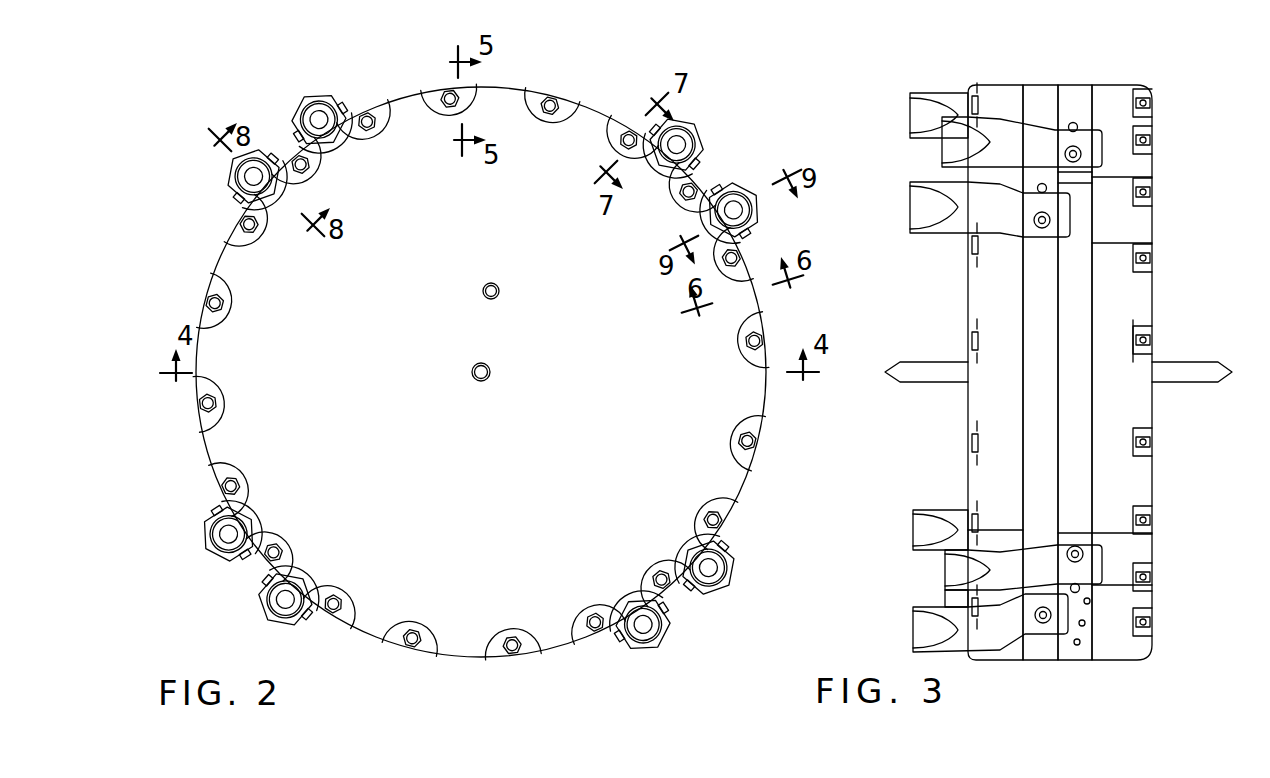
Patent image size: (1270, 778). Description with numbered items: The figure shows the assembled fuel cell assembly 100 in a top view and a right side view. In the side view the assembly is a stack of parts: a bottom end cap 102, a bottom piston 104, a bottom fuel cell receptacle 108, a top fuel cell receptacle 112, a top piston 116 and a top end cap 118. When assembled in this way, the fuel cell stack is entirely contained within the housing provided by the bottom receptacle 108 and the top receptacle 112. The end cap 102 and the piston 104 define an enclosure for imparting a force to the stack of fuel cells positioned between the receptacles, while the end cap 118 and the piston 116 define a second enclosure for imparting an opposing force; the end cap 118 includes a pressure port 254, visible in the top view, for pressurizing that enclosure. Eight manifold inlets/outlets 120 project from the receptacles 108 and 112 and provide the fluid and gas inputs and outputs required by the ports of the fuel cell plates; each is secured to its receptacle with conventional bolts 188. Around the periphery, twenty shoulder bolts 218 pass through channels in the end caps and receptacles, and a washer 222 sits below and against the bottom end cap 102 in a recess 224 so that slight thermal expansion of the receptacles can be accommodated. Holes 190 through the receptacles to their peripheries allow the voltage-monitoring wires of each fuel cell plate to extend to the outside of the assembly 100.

In FIG. 2, the fuel cell assembly 100 is at (266, 88).
In FIG. 3, the fuel cell assembly 100 is at (947, 62).
In FIG. 3, the bottom end cap 102 is at (1168, 357).
In FIG. 3, the bottom piston 104 is at (1173, 390).
In FIG. 3, the bottom fuel cell receptacle 108 is at (1077, 84).
In FIG. 3, the top fuel cell receptacle 112 is at (1031, 84).
In FIG. 2, the top piston 116 is at (492, 365).
In FIG. 3, the top piston 116 is at (937, 392).
In FIG. 2, the top end cap 118 is at (583, 134).
In FIG. 3, the top end cap 118 is at (980, 84).
In FIG. 2, the manifold inlets/outlets 120 is at (749, 170).
In FIG. 3, the manifold inlets/outlets 120 is at (926, 90).
In FIG. 3, the bolts 188 is at (1043, 183).
In FIG. 3, the holes 190 is at (1088, 605).
In FIG. 2, the shoulder bolt 218 is at (361, 106).
In FIG. 3, the shoulder bolt 218 is at (969, 337).
In FIG. 3, the washer 222 is at (1148, 336).
In FIG. 3, the recess 224 is at (1152, 350).
In FIG. 2, the pressure port 254 is at (502, 285).